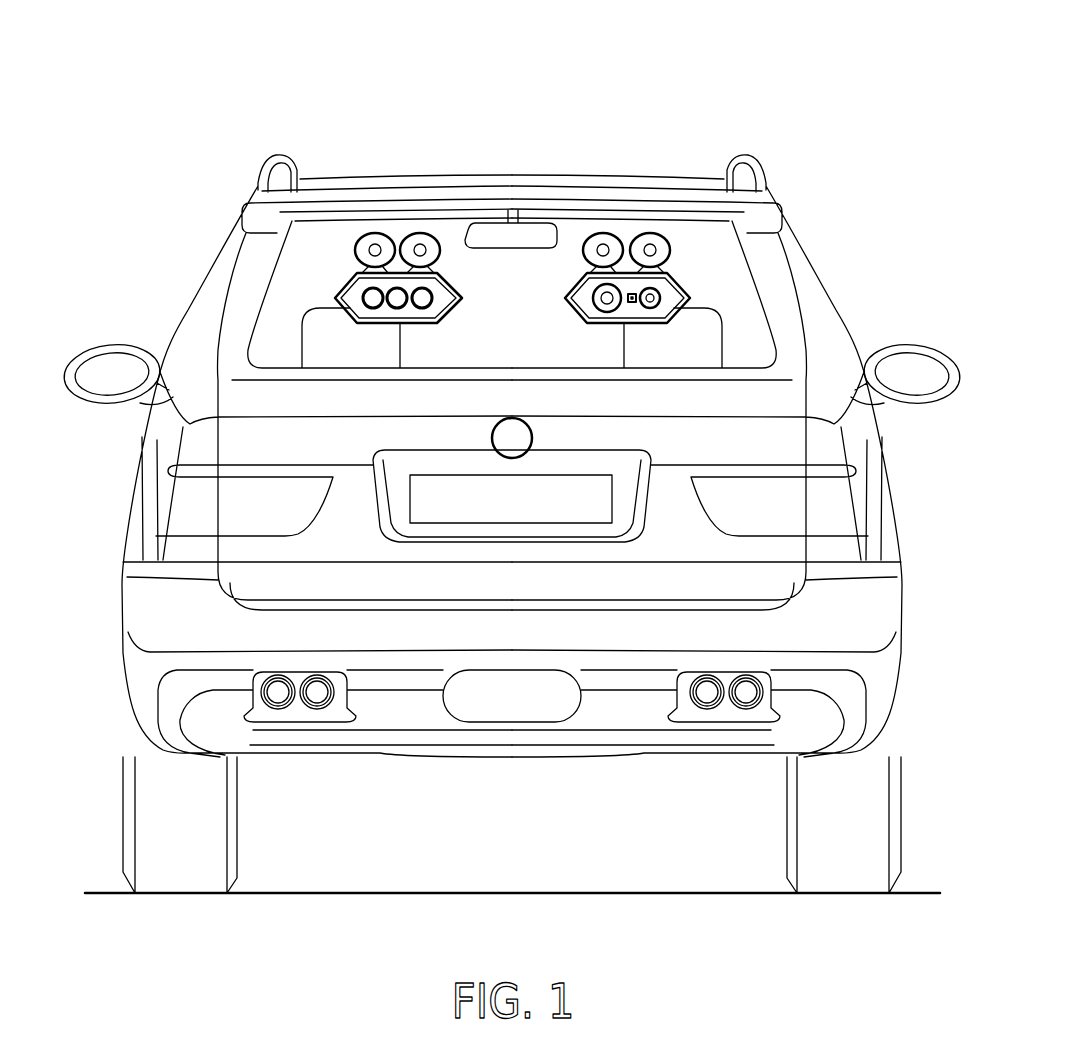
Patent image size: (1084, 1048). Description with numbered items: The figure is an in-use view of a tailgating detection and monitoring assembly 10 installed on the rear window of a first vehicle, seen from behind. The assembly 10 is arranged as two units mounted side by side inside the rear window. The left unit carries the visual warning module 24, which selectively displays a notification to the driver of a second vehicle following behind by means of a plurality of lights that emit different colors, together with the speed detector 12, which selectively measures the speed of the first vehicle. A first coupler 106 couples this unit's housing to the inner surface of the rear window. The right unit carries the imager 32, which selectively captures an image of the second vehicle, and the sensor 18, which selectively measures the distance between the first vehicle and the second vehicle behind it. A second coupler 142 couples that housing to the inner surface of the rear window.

The tailgating detection and monitoring assembly 10 is at (772, 105).
The speed detector 12 is at (427, 292).
The sensor 18 is at (661, 300).
The visual warning module 24 is at (392, 290).
The imager 32 is at (593, 294).
The first coupler 106 is at (421, 232).
The second coupler 142 is at (648, 233).